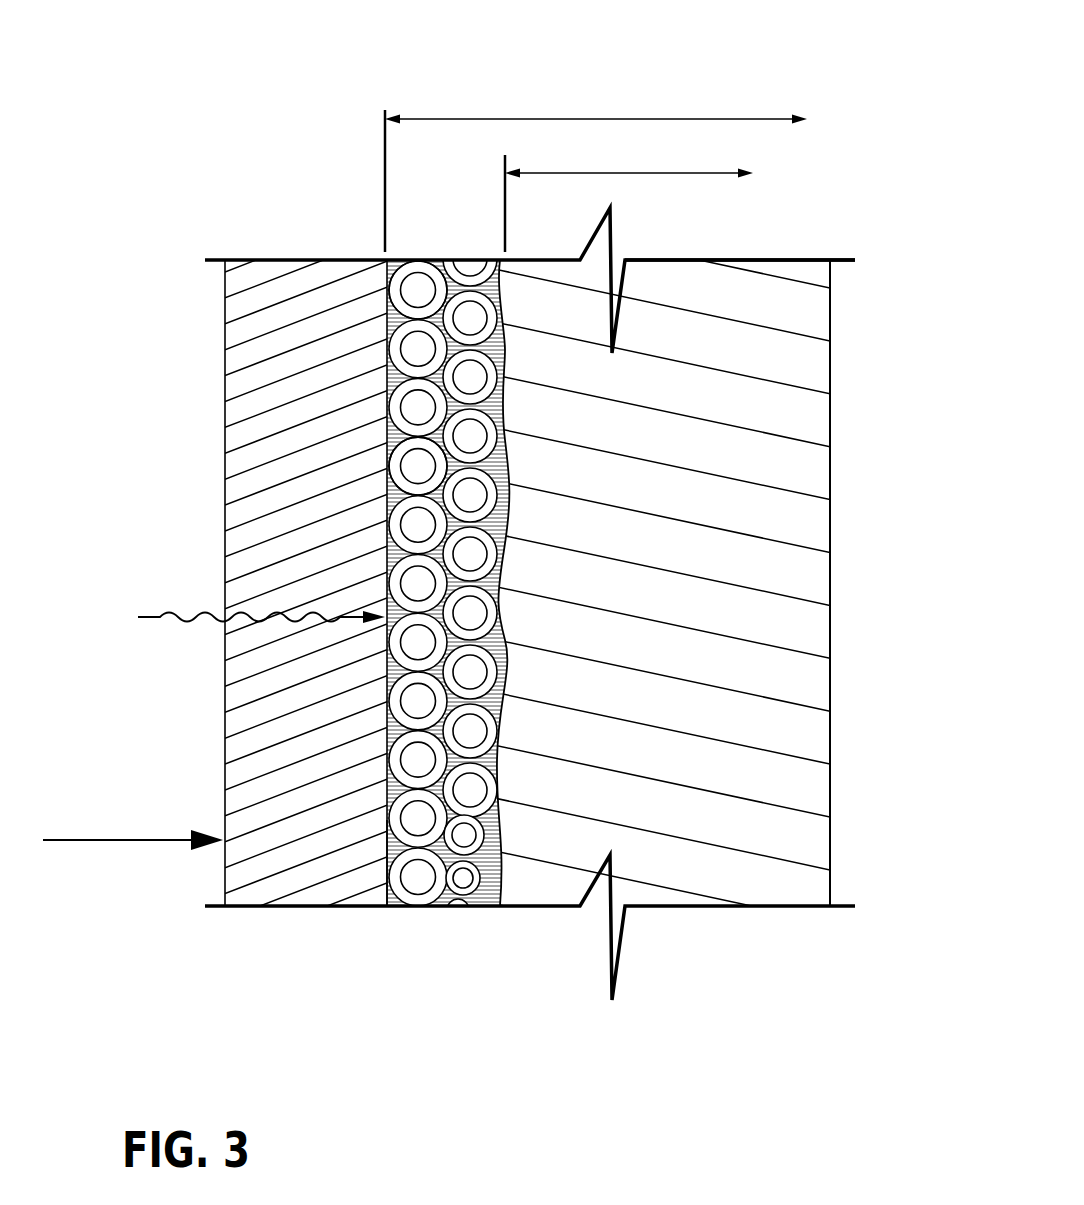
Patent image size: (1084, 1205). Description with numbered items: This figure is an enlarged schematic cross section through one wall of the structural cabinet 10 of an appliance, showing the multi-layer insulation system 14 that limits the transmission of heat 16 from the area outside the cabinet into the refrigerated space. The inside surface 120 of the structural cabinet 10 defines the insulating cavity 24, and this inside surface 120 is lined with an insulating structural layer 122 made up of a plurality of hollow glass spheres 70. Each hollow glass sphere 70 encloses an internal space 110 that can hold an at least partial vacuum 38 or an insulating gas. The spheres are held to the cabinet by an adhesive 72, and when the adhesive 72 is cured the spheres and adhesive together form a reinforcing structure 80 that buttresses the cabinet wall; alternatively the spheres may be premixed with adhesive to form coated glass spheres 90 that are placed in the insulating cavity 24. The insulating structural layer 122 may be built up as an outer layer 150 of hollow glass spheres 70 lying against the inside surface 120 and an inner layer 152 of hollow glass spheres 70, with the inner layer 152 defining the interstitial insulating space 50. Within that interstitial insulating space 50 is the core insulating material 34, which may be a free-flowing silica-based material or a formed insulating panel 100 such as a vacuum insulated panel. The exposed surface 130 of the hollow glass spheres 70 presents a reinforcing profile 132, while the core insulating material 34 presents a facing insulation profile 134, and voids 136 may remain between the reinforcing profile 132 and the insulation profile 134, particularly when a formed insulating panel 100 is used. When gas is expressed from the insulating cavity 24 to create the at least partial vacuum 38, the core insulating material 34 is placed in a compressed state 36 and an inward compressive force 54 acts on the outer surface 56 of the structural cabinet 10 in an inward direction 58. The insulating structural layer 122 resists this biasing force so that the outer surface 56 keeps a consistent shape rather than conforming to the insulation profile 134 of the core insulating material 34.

The structural cabinet 10 is at (277, 297).
The multi-layer insulation system 14 is at (868, 585).
The heat 16 is at (190, 612).
The insulating cavity 24 is at (642, 117).
The core insulating material 34 is at (771, 296).
The compressed state 36 is at (830, 432).
The at least partial vacuum 38 is at (682, 915).
The interstitial insulating space 50 is at (675, 175).
The inward compressive force 54 is at (130, 838).
The outer surface 56 is at (225, 874).
The inward direction 58 is at (150, 848).
The hollow glass spheres 70 is at (445, 912).
The adhesive 72 is at (387, 848).
The reinforcing structure 80 is at (498, 302).
The coated glass spheres 90 is at (382, 277).
The formed insulating panel 100 is at (740, 412).
The internal space 110 is at (415, 703).
The inside surface 120 is at (410, 492).
The insulating structural layer 122 is at (423, 247).
The exposed surface 130 is at (505, 502).
The reinforcing profile 132 is at (500, 632).
The insulation profile 134 is at (495, 727).
The voids 136 is at (512, 613).
The outer layer 150 is at (405, 912).
The inner layer 152 is at (477, 915).